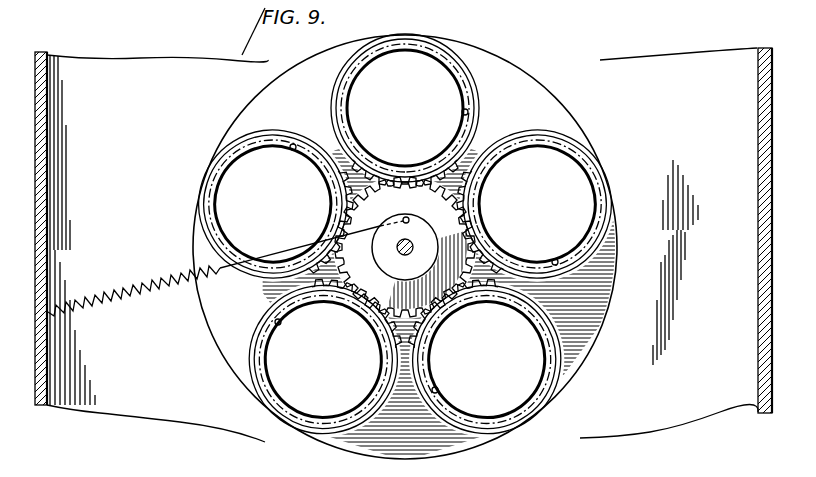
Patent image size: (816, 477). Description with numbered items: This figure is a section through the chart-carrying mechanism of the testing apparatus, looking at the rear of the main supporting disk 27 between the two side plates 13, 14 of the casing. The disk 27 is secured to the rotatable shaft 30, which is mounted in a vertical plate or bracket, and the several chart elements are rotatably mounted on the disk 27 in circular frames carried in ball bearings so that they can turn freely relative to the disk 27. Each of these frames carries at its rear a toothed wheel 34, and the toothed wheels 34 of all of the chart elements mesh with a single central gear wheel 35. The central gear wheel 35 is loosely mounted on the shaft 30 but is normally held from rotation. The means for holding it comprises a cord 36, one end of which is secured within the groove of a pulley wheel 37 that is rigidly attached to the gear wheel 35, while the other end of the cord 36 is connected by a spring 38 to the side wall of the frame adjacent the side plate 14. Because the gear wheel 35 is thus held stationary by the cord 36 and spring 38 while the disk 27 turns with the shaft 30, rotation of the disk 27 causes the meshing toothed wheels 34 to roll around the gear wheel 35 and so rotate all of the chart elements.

The side plate 13 is at (757, 205).
The side plate 14 is at (47, 249).
The disk 27 is at (558, 127).
The shaft 30 is at (396, 250).
The toothed wheel 34 is at (333, 180).
The central gear wheel 35 is at (443, 280).
The cord 36 is at (268, 252).
The pulley wheel 37 is at (418, 230).
The spring 38 is at (160, 288).